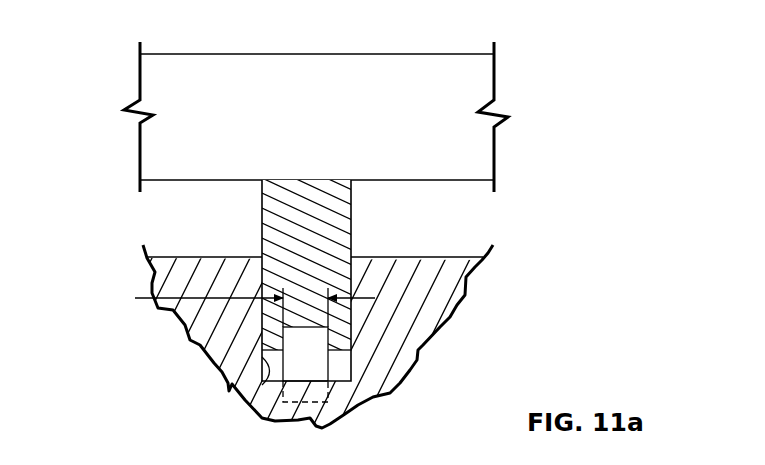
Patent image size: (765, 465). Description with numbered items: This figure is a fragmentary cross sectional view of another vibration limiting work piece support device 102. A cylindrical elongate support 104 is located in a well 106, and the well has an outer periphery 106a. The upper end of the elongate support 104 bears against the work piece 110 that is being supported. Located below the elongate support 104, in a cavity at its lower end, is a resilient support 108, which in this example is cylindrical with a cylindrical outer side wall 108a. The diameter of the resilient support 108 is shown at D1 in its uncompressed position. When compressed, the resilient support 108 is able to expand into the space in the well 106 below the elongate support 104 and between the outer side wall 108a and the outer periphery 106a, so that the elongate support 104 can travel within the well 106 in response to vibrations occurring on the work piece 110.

The vibration limiting work piece support device 102 is at (116, 71).
The work piece 110 is at (372, 77).
The cylindrical elongate support 104 is at (253, 211).
The well 106 is at (250, 247).
The resilient support 108 is at (313, 338).
The cylindrical outer side wall 108a is at (328, 363).
The outer periphery 106a is at (262, 387).
The diameter of the resilient support in uncompressed position D1 is at (239, 297).